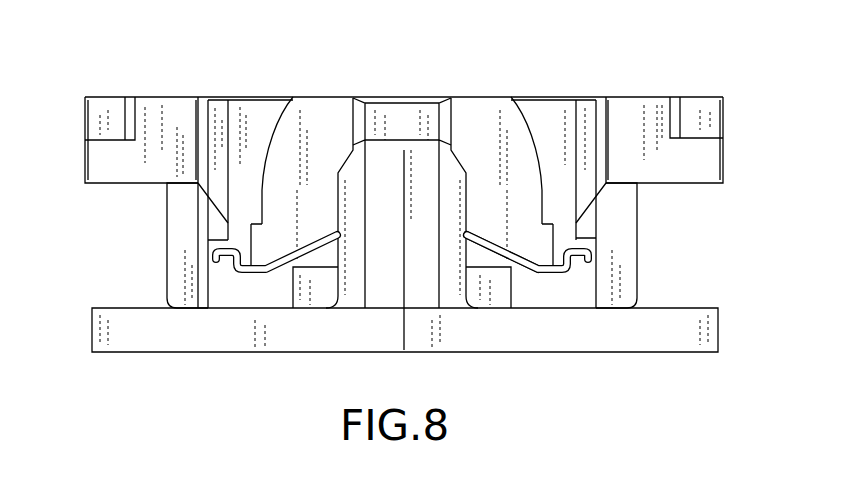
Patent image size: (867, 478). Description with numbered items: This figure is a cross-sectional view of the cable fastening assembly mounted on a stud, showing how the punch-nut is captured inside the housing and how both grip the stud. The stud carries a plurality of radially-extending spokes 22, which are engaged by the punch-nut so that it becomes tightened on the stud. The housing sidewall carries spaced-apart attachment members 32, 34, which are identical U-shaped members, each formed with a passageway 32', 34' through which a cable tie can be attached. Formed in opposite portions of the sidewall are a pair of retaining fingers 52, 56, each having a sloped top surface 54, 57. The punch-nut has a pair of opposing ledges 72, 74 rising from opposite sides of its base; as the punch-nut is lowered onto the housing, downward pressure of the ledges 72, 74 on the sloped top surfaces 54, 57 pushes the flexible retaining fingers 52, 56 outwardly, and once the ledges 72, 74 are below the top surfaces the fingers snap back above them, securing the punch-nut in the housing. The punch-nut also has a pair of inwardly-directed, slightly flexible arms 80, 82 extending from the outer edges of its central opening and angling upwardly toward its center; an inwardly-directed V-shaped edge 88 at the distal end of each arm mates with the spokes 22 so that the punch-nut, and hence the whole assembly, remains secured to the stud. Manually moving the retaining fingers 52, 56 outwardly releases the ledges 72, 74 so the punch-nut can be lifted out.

The spokes 22 is at (338, 186).
The attachment member 32 is at (705, 92).
The passageway 32' is at (664, 105).
The attachment member 34 is at (112, 91).
The passageway 34' is at (149, 111).
The retaining finger 52 is at (628, 271).
The sloped top surface 54 is at (587, 212).
The retaining finger 56 is at (175, 267).
The sloped top surface 57 is at (218, 210).
The ledge 72 is at (223, 258).
The ledge 74 is at (590, 253).
The arm 80 is at (530, 270).
The arm 82 is at (306, 252).
The V-shaped edge 88 is at (468, 236).